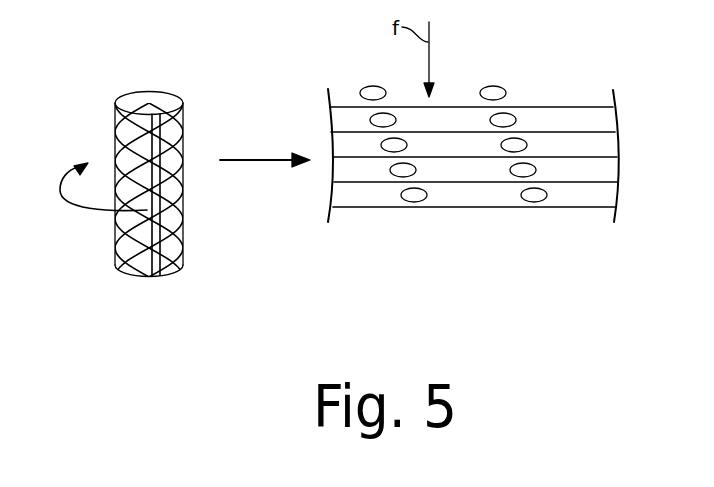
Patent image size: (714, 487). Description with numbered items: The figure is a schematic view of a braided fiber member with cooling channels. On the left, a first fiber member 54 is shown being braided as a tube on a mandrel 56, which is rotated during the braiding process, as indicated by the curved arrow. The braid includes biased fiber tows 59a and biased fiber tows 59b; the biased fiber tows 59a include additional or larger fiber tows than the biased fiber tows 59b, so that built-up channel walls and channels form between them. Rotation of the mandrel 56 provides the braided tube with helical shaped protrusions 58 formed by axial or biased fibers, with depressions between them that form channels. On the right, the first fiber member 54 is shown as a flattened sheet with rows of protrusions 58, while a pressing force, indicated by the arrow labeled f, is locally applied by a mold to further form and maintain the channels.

The first fiber member 54 is at (165, 220).
The mandrel 56 is at (148, 103).
The helical shaped protrusions 58 is at (401, 173).
The biased fiber tows 59a is at (180, 148).
The biased fiber tows 59b is at (182, 187).